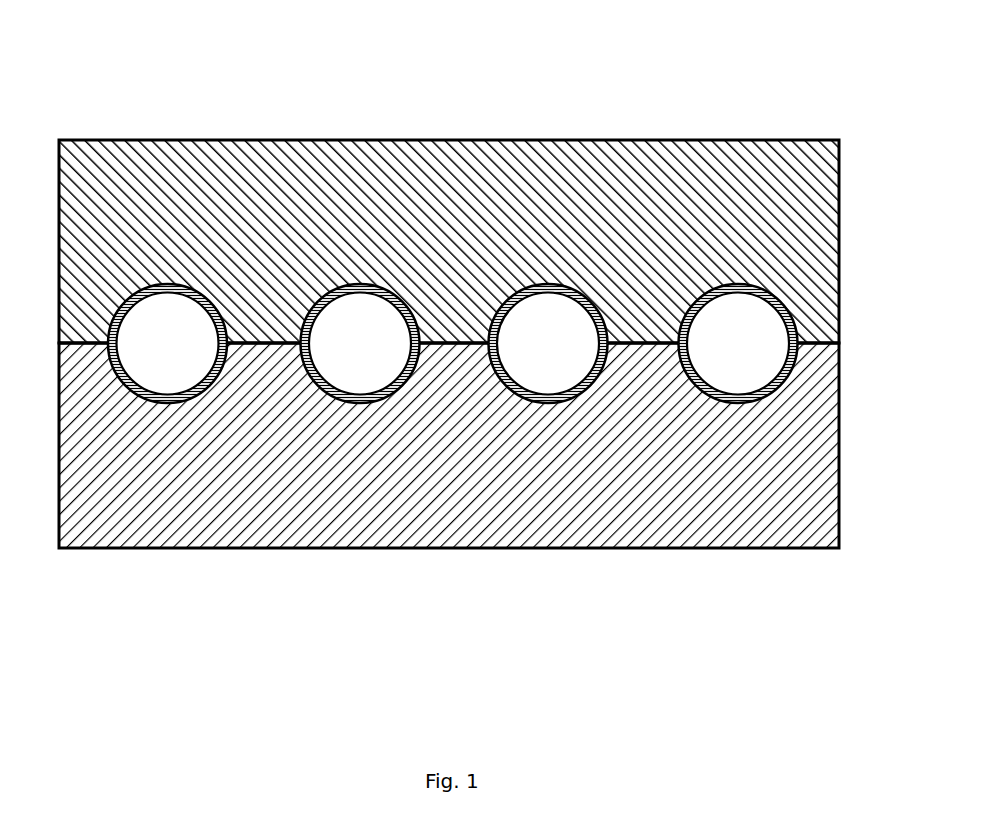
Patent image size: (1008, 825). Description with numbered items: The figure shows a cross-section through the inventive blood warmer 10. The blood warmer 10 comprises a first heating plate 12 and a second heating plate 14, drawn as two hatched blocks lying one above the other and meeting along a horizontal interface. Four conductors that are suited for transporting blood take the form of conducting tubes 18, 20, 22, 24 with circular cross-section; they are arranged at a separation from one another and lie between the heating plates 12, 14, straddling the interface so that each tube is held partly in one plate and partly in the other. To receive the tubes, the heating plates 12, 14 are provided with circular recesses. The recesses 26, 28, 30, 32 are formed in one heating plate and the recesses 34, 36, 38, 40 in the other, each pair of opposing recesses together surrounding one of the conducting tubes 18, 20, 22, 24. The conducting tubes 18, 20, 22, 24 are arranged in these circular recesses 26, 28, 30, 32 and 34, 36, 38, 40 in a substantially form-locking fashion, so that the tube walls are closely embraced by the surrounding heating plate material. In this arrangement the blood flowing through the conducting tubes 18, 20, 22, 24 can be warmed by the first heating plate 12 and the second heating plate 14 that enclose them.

The blood warmer 10 is at (812, 90).
The first heating plate 12 is at (310, 120).
The second heating plate 14 is at (239, 566).
The conducting tube 18 is at (163, 377).
The conducting tube 20 is at (372, 362).
The conducting tube 22 is at (552, 345).
The conducting tube 24 is at (750, 362).
The circular recess 26 is at (108, 370).
The circular recess 28 is at (393, 407).
The circular recess 30 is at (583, 400).
The circular recess 32 is at (797, 380).
The circular recess 34 is at (183, 285).
The circular recess 36 is at (398, 288).
The circular recess 38 is at (563, 286).
The circular recess 40 is at (757, 286).